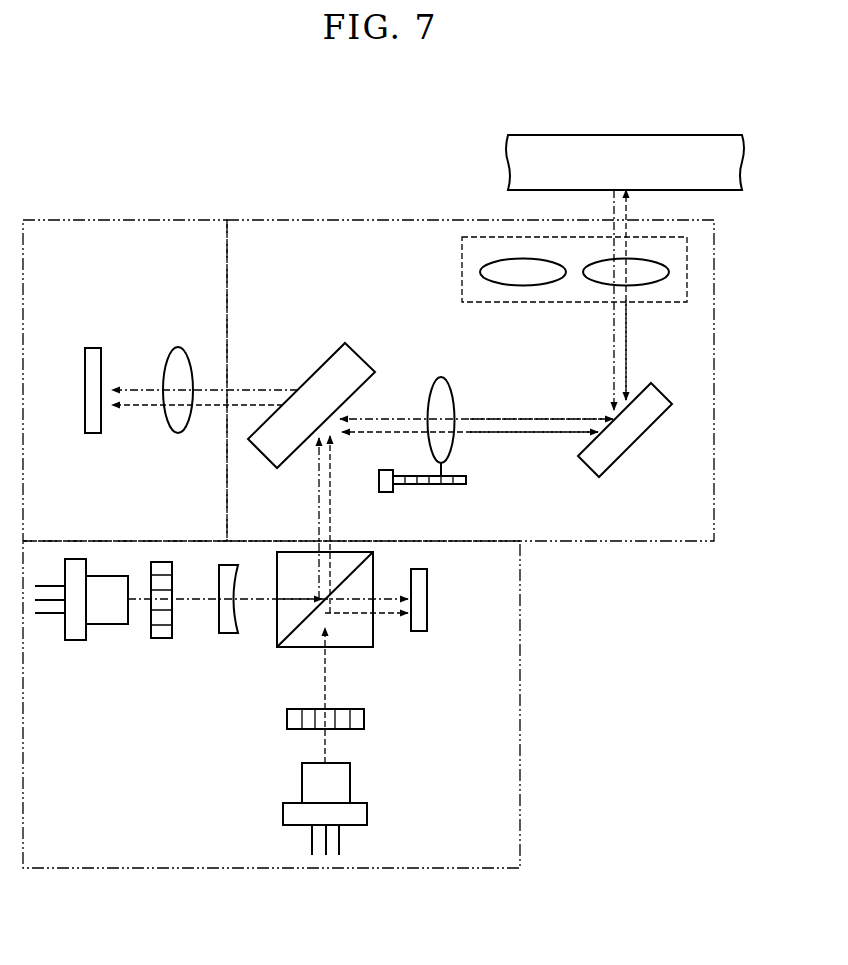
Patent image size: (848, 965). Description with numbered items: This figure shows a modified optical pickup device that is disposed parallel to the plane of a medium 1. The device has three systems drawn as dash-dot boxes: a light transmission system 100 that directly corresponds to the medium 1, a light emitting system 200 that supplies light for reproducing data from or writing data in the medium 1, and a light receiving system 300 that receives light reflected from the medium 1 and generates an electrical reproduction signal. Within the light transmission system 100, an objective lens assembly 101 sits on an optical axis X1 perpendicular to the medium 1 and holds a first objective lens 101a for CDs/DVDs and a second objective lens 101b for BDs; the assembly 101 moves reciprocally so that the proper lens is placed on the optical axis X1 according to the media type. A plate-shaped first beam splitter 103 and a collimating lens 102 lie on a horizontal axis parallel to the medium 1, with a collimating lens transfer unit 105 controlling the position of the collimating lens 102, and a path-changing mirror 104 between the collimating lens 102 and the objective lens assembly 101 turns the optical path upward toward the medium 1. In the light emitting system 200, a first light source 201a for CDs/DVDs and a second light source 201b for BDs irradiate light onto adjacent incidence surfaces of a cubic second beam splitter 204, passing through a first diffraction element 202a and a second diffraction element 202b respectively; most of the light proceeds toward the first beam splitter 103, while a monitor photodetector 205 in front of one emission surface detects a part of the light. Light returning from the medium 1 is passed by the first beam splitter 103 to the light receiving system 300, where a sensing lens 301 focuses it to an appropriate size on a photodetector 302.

The medium 1 is at (508, 161).
The light transmission system 100 is at (310, 219).
The objective lens assembly 101 is at (460, 267).
The first objective lens 101a is at (521, 285).
The second objective lens 101b is at (650, 285).
The collimating lens 102 is at (441, 377).
The first beam splitter 103 is at (327, 362).
The path-changing mirror 104 is at (633, 440).
The collimating lens transfer unit 105 is at (420, 486).
The optical axis X1 is at (613, 365).
The light emitting system 200 is at (272, 869).
The first light source 201a is at (370, 814).
The second light source 201b is at (76, 641).
The first diffraction element 202a is at (366, 720).
The second diffraction element 202b is at (162, 639).
The second beam splitter 204 is at (272, 663).
The monitor photodetector 205 is at (430, 601).
The light receiving system 300 is at (124, 219).
The sensing lens 301 is at (178, 350).
The photodetector 302 is at (92, 347).